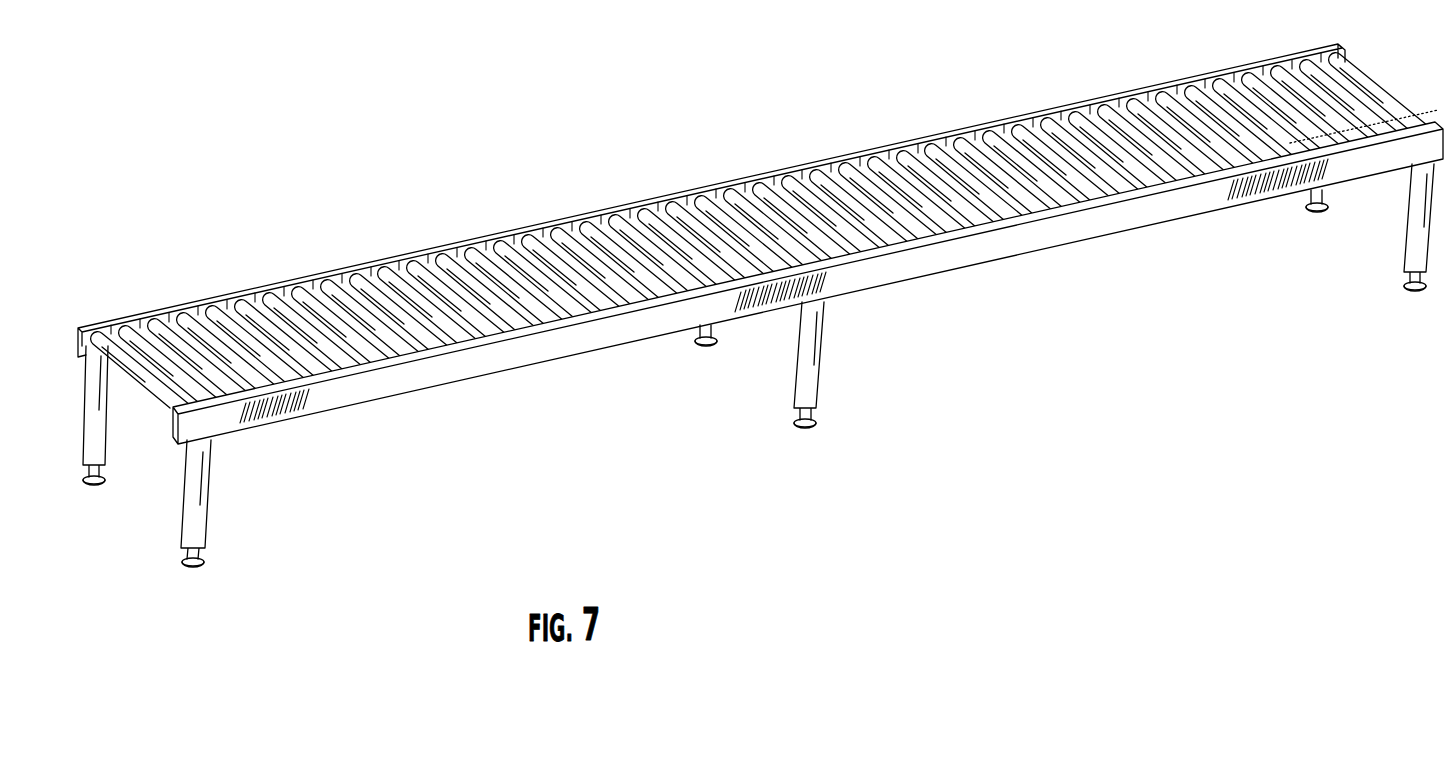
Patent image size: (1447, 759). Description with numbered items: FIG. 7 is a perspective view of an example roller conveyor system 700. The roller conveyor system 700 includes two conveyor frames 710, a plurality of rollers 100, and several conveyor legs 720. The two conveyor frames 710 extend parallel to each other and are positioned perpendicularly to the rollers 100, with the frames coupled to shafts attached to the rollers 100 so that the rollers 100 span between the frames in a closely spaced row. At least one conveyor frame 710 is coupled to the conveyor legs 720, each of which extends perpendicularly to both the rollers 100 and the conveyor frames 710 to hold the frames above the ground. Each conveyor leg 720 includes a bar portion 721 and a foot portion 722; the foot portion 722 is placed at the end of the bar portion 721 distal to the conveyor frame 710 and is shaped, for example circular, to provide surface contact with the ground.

The roller conveyor system 700 is at (760, 343).
The roller 100 is at (760, 258).
The conveyor frame 710 is at (515, 335).
The conveyor leg 720 is at (758, 403).
The bar portion 721 is at (187, 503).
The foot portion 722 is at (192, 574).